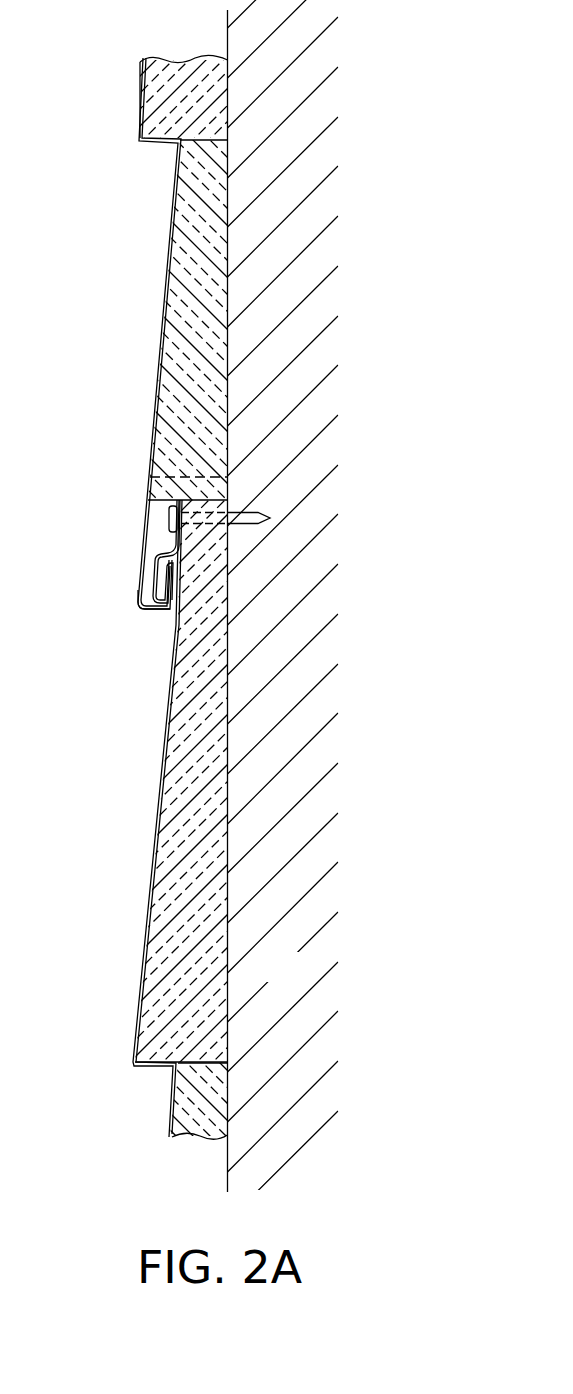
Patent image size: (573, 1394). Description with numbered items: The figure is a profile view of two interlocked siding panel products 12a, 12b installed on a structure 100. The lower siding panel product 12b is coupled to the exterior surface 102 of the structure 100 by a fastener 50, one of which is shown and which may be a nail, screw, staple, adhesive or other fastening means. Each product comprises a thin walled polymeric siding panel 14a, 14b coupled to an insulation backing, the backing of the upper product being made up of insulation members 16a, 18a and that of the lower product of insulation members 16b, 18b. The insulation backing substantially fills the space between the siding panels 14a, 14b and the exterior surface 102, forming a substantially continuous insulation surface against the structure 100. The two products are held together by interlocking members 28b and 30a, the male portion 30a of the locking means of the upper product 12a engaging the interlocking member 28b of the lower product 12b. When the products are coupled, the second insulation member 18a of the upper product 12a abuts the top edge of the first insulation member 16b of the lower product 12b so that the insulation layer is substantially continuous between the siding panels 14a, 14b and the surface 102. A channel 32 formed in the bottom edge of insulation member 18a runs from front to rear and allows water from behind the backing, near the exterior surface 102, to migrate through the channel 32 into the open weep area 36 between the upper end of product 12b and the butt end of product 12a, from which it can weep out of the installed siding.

The structure 100 is at (304, 979).
The exterior surface 102 is at (225, 1178).
The siding panel product 12a is at (132, 228).
The siding panel 14a is at (163, 307).
The first insulation member 16a is at (198, 107).
The second insulation member 18a is at (215, 402).
The channel 32 is at (217, 487).
The open weep area 36 is at (157, 535).
The fastener 50 is at (262, 524).
The interlocking member 28b is at (157, 568).
The male portion 30a is at (142, 617).
The siding panel product 12b is at (122, 822).
The siding panel 14b is at (145, 927).
The first insulation member 16b is at (222, 675).
The second insulation member 18b is at (213, 1083).